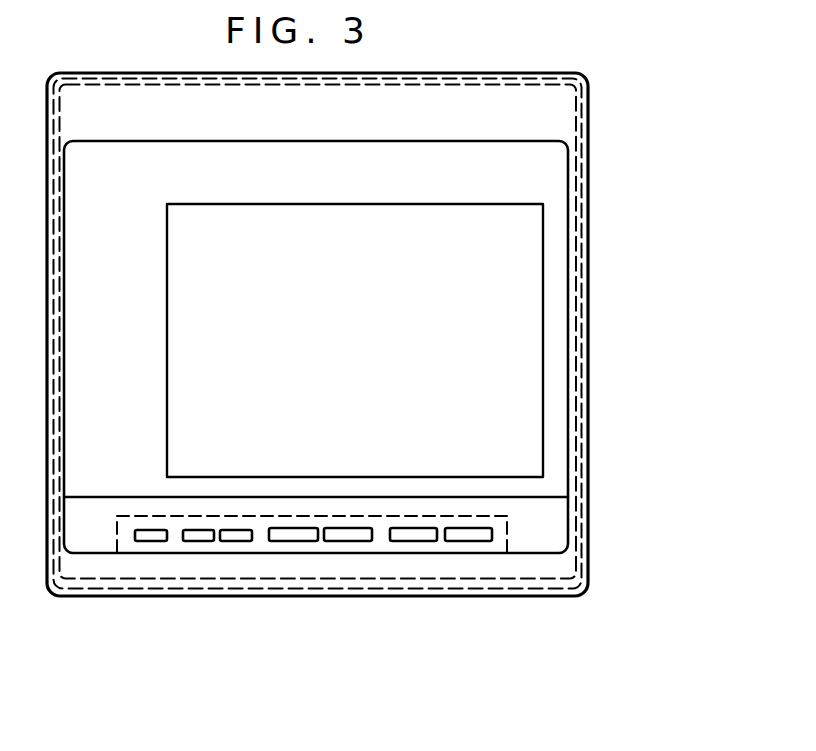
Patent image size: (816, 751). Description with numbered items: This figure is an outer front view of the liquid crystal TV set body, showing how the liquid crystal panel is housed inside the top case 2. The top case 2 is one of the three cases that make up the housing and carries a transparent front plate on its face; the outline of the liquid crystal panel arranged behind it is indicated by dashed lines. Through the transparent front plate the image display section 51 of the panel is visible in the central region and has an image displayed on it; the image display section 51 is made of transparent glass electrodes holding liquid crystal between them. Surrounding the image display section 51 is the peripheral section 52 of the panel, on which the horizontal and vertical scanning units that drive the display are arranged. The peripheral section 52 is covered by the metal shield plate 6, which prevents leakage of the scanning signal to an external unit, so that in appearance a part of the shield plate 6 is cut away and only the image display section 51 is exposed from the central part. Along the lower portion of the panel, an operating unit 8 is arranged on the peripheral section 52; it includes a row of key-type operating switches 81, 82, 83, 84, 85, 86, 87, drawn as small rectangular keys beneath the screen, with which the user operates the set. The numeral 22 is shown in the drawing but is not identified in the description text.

The top case 2 is at (588, 104).
The metal shield plate 6 is at (570, 158).
The display screen 22 is at (502, 278).
The image display section 51 is at (525, 342).
The peripheral section 52 is at (545, 540).
The operating unit 8 is at (497, 545).
The operating switch 81 is at (150, 541).
The operating switch 82 is at (195, 541).
The operating switch 83 is at (236, 541).
The operating switch 84 is at (295, 541).
The operating switch 85 is at (347, 541).
The operating switch 86 is at (407, 541).
The operating switch 87 is at (463, 541).